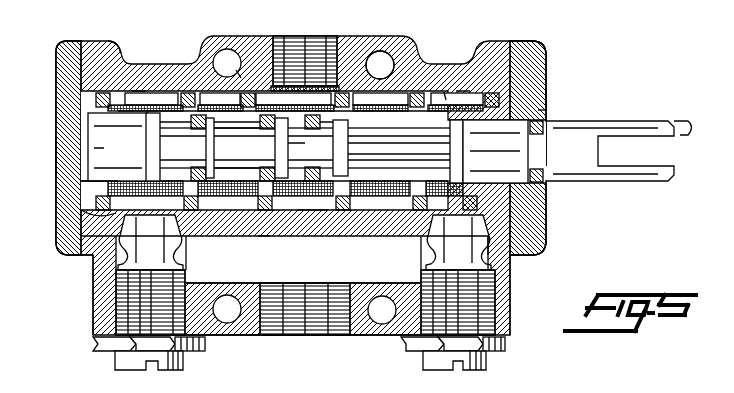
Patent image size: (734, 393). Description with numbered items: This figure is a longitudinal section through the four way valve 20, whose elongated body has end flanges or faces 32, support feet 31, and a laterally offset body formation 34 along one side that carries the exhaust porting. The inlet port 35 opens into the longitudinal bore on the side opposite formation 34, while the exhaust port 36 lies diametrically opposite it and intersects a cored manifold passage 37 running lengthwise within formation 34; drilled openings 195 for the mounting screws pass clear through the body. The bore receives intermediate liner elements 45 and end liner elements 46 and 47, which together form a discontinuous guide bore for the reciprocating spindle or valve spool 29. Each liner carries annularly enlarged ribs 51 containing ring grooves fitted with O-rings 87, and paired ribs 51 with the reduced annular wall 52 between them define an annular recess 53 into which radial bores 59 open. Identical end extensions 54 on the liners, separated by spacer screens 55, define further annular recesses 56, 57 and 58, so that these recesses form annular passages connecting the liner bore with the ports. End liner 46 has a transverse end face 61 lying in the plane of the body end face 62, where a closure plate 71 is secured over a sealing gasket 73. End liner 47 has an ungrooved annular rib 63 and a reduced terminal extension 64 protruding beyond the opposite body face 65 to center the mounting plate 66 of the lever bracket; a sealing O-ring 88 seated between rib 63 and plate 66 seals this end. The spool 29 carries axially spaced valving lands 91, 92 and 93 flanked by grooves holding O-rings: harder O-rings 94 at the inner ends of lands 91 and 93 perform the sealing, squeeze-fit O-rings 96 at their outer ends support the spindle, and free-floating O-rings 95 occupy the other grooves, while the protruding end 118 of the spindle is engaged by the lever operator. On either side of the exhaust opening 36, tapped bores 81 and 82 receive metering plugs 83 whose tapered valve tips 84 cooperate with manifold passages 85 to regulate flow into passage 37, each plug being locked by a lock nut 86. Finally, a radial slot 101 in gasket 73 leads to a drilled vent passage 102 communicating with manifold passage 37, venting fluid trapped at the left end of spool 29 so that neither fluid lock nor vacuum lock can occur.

The valve 20 is at (126, 28).
The valve spindle 29 is at (556, 168).
The support feet 31 is at (250, 328).
The end flanges 32 is at (88, 262).
The body formation 34 is at (404, 30).
The inlet port 35 is at (318, 28).
The exhaust port 36 is at (290, 328).
The manifold passage 37 is at (308, 269).
The intermediate liner element 45 is at (230, 62).
The end liner element 46 is at (75, 104).
The end liner element 47 is at (537, 92).
The annularly enlarged rib 51 is at (92, 84).
The annular wall 52 is at (304, 148).
The annular recess 53 is at (190, 84).
The end extension 54 is at (120, 118).
The spacer screen 55 is at (130, 83).
The annular recess 56 is at (294, 233).
The annular recess 57 is at (133, 90).
The annular recess 58 is at (482, 84).
The radial bore 59 is at (224, 108).
The end face 61 is at (73, 178).
The end face 62 is at (73, 217).
The annular rib 63 is at (505, 70).
The terminal extension 64 is at (539, 103).
The end face 65 is at (525, 215).
The mounting plate 66 is at (543, 238).
The closure plate 71 is at (62, 151).
The sealing gasket 73 is at (70, 48).
The tapped bore 81 is at (115, 292).
The tapped bore 82 is at (490, 300).
The metering plug 83 is at (130, 362).
The tapered valve tip 84 is at (145, 230).
The manifold passage 85 is at (178, 226).
The lock nut 86 is at (96, 343).
The O-ring 87 is at (163, 84).
The cover 88 is at (537, 76).
The valving land 91 is at (212, 167).
The valving land 92 is at (310, 208).
The valving land 93 is at (499, 137).
The O-ring 94 is at (470, 160).
The O-ring 95 is at (293, 152).
The O-ring 96 is at (104, 143).
The radial slot 101 is at (73, 200).
The vent passage 102 is at (75, 246).
The pin 118 is at (678, 128).
The passage 195 is at (219, 41).